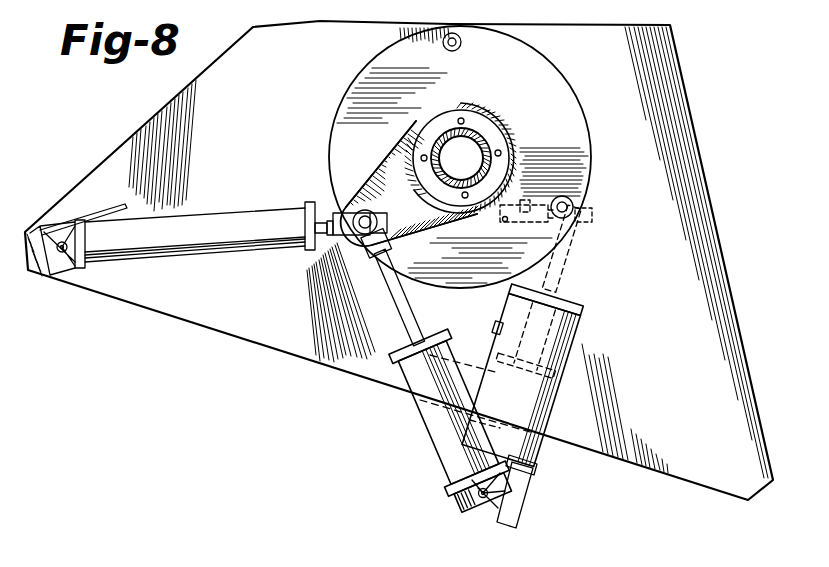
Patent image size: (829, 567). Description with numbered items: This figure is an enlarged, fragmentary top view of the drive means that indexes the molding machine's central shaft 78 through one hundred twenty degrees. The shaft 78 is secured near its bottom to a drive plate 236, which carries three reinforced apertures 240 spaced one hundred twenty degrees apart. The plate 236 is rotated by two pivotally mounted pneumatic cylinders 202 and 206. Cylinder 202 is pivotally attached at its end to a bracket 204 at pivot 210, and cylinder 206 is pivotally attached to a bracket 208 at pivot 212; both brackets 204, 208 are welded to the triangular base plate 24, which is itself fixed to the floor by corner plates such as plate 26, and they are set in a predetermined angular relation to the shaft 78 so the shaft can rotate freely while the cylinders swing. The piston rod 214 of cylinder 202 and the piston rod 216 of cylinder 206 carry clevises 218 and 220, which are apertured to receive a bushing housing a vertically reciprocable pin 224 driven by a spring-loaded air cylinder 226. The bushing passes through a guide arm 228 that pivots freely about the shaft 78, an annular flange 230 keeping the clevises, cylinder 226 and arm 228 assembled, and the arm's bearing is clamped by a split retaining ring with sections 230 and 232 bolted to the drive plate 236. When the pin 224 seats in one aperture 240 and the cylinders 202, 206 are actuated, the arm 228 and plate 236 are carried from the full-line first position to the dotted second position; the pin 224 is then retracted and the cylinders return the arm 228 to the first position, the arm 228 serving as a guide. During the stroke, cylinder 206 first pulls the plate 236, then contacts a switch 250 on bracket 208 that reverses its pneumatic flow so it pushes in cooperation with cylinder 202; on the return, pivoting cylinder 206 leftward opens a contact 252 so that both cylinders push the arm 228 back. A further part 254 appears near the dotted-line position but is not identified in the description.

The triangular floor support 24 is at (675, 148).
The corner plate 26 is at (736, 8).
The shaft 78 is at (497, 147).
The pneumatic cylinder 202 is at (241, 204).
The bracket 204 is at (93, 210).
The pneumatic cylinder 206 is at (445, 427).
The bracket 208 is at (447, 510).
The pivotal attachment 210 is at (62, 278).
The pivotal attachment 212 is at (482, 500).
The piston rod 214 is at (318, 205).
The piston rod 216 is at (413, 313).
The clevis 218 is at (343, 210).
The clevis 220 is at (408, 241).
The pin 224 is at (388, 166).
The air cylinder 226 is at (380, 218).
The guide arm 228 is at (392, 163).
The annular flange 230 is at (447, 95).
The split retaining ring section 232 is at (520, 137).
The drive plate 236 is at (541, 80).
The reinforced apertures 240 is at (452, 33).
The switch 250 is at (537, 470).
The contact 252 is at (542, 459).
The link 254 is at (592, 222).